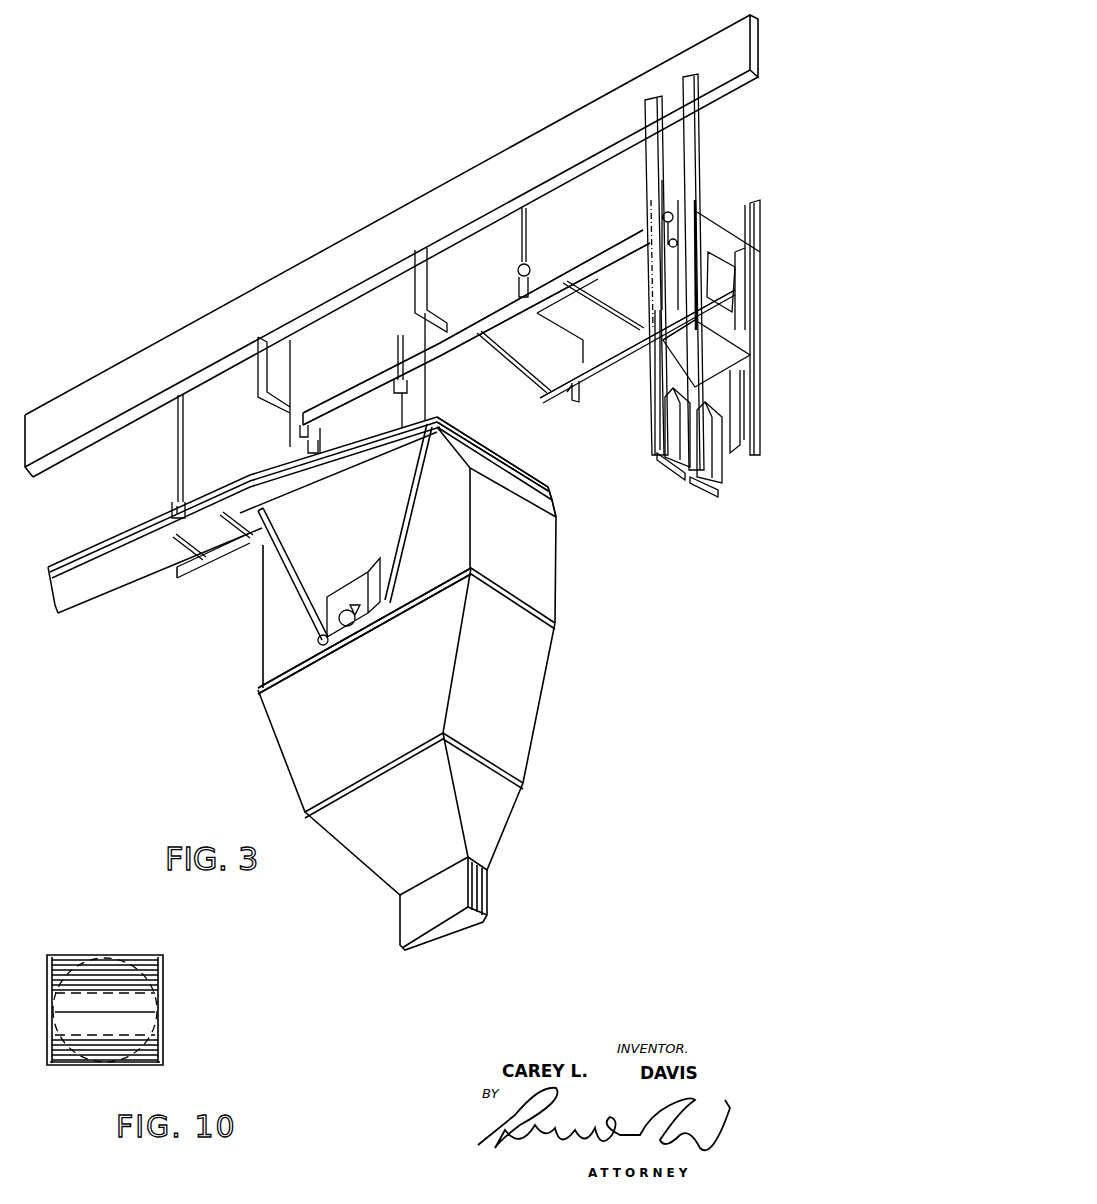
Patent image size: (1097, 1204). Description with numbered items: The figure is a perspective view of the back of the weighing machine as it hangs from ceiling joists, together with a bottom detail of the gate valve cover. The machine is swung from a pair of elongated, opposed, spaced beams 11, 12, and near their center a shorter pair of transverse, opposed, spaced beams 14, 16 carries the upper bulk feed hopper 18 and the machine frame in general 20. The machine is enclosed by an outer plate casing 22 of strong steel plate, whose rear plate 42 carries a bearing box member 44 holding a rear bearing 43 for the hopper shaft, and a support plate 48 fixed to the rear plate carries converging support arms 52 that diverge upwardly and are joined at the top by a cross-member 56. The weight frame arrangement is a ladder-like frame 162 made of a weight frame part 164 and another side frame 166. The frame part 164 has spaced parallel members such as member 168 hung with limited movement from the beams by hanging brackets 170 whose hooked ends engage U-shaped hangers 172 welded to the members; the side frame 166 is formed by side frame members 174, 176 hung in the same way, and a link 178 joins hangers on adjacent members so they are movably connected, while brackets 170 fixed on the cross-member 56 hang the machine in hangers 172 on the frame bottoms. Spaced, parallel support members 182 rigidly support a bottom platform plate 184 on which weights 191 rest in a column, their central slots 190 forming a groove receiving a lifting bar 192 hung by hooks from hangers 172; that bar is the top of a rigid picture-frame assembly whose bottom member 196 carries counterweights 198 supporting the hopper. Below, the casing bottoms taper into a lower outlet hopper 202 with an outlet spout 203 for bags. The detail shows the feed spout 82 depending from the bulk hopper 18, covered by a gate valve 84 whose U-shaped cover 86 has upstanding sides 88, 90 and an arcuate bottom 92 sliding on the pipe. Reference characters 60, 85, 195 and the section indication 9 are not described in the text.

In FIG. 3, the beam 11 is at (497, 160).
In FIG. 3, the beam 12 is at (347, 448).
In FIG. 3, the transverse beam 14 is at (282, 392).
In FIG. 3, the transverse beam 16 is at (418, 300).
In FIG. 3, the upper bulk feed hopper 18 is at (345, 312).
In FIG. 3, the machine frame 20 is at (533, 453).
In FIG. 3, the outer plate casing 22 is at (270, 603).
In FIG. 3, the rear plate 42 is at (432, 572).
In FIG. 3, the rear bearing 43 is at (318, 640).
In FIG. 3, the bearing box member 44 is at (340, 582).
In FIG. 3, the support plate 48 is at (397, 570).
In FIG. 3, the support arm 52 is at (287, 556).
In FIG. 3, the cross-member 56 is at (333, 480).
In FIG. 3, the hopper rim 60 is at (554, 485).
In FIG. 10, the feed spout 82 is at (140, 1012).
In FIG. 10, the gate valve 84 is at (152, 980).
In FIG. 3, the bracket 85 is at (740, 291).
In FIG. 3, the cover 86 is at (708, 320).
In FIG. 10, the upstanding side 88 is at (48, 1017).
In FIG. 10, the upstanding side 90 is at (160, 1064).
In FIG. 10, the arcuate bottom 92 is at (145, 1048).
In FIG. 3, the section line 9 is at (665, 265).
In FIG. 3, the ladder-like frame 162 is at (328, 402).
In FIG. 3, the weight frame part 164 is at (474, 336).
In FIG. 3, the side frame 166 is at (152, 537).
In FIG. 3, the frame member 168 is at (178, 574).
In FIG. 3, the hanging bracket 170 is at (178, 445).
In FIG. 3, the U-shaped hanger 172 is at (171, 505).
In FIG. 3, the side frame member 174 is at (426, 352).
In FIG. 3, the side frame member 176 is at (573, 397).
In FIG. 3, the link 178 is at (318, 437).
In FIG. 3, the support member 182 is at (690, 97).
In FIG. 3, the bottom support platform plate 184 is at (706, 353).
In FIG. 3, the central slot 190 is at (630, 327).
In FIG. 3, the weight 191 is at (716, 336).
In FIG. 3, the lifting bar 192 is at (655, 385).
In FIG. 3, the hook 195 is at (658, 426).
In FIG. 3, the bottom member 196 is at (735, 462).
In FIG. 3, the counterweight 198 is at (657, 466).
In FIG. 3, the lower outlet hopper 202 is at (528, 700).
In FIG. 3, the outlet spout 203 is at (484, 897).